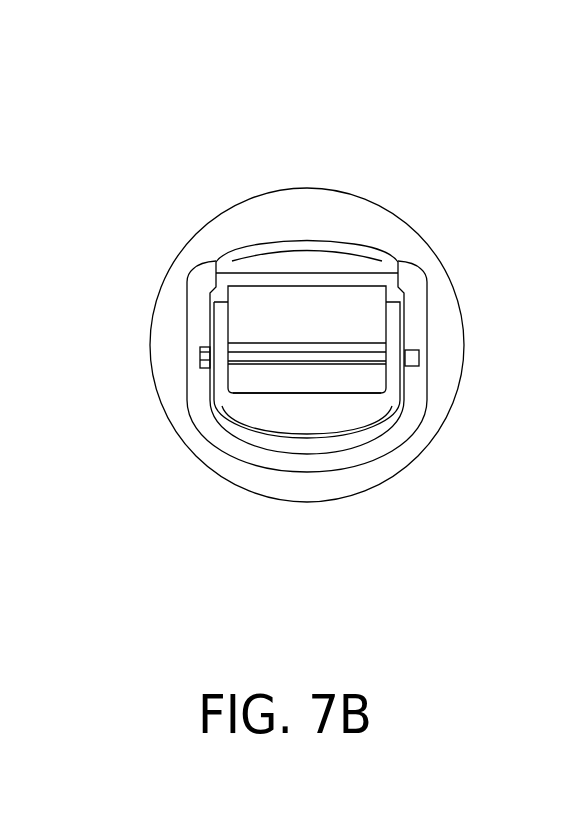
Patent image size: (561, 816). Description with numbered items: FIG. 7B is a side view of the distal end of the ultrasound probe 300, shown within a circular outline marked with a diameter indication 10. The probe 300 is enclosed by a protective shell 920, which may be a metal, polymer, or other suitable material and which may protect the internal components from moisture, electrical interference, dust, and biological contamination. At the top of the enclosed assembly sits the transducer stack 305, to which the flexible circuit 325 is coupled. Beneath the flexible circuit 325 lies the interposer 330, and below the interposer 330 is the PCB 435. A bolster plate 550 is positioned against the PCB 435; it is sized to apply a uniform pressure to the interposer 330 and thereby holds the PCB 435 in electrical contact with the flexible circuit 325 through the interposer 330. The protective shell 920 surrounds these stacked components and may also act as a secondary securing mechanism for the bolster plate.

The ultrasound probe 300 is at (464, 131).
The diameter of housing (10 mm) 10 is at (430, 229).
The transducer stack 305 is at (303, 238).
The protective shell 920 is at (187, 276).
The bolster plate 550 is at (311, 430).
The flexible circuit 325 is at (242, 318).
The interposer 330 is at (243, 347).
The PCB 435 is at (372, 383).